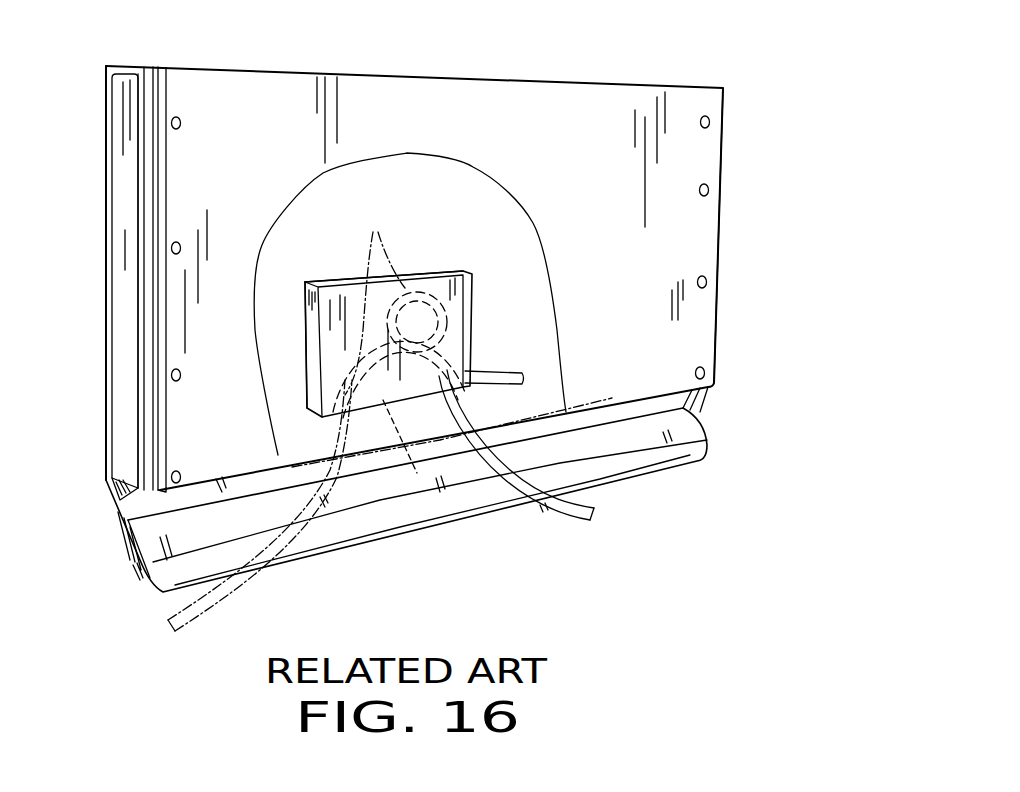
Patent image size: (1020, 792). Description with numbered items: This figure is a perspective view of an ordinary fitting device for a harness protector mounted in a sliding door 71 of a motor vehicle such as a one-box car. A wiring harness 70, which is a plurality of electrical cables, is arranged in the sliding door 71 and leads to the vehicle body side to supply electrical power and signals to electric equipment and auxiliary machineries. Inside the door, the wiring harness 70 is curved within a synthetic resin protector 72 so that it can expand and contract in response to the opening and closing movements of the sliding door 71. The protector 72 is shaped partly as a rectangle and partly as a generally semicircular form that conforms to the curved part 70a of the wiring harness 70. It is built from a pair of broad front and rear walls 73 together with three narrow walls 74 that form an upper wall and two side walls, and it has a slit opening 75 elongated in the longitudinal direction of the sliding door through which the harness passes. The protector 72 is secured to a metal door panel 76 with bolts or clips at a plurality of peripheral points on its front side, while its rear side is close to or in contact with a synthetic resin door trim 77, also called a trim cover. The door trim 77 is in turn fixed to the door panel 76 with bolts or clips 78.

The wiring harness 70 is at (517, 480).
The curved part of the wiring harness 70a is at (382, 295).
The sliding door 71 is at (552, 66).
The protector 72 is at (443, 269).
The front and rear walls 73 is at (307, 350).
The narrow walls 74 is at (318, 287).
The slit opening 75 is at (471, 486).
The door panel 76 is at (112, 242).
The door trim 77 is at (677, 220).
The bolts or clips 78 is at (707, 281).